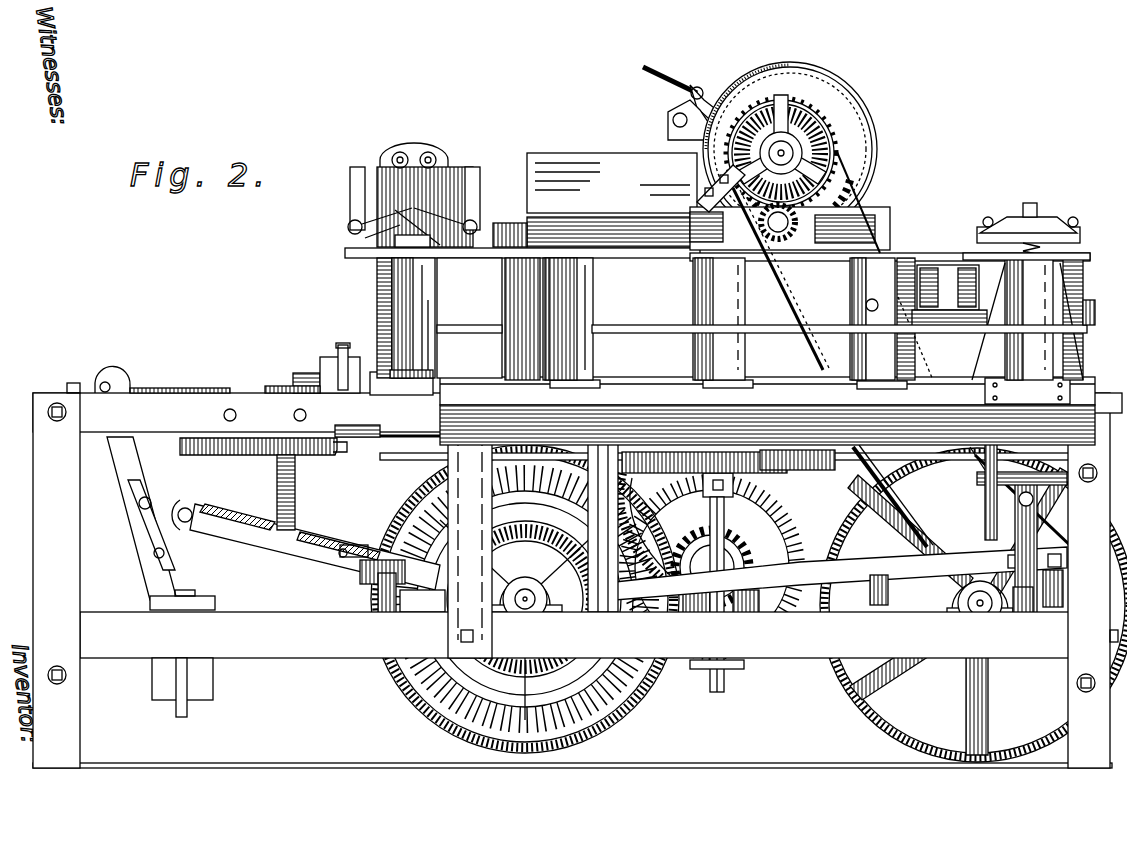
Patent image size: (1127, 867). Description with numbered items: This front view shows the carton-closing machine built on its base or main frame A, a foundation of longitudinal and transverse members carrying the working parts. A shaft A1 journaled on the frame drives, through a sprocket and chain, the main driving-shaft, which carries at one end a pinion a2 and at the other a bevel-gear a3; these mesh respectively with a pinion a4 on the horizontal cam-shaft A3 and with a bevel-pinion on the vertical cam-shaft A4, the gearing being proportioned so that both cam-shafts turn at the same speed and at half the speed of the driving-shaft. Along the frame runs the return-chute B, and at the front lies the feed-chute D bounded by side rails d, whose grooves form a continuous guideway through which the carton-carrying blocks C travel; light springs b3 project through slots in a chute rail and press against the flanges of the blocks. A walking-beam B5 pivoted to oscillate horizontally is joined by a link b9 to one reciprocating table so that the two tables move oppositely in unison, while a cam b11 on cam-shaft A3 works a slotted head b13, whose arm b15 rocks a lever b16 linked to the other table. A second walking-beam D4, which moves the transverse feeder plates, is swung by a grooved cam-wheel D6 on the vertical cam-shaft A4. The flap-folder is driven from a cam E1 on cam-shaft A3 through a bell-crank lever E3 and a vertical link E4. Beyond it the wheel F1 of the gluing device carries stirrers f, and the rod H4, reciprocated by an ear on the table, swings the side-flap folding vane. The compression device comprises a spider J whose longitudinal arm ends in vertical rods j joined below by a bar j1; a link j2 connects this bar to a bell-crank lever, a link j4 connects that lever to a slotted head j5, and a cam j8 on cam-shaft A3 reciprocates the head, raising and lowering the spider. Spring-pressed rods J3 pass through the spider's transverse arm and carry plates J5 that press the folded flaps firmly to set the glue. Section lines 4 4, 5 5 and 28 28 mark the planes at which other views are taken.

The base or main frame A is at (305, 655).
The shaft A1 is at (982, 612).
The horizontal cam-shaft A3 is at (525, 604).
The vertical cam-shaft A4 is at (740, 615).
The pinion a2 is at (745, 540).
The bevel-gear a3 is at (775, 602).
The pinion a4 is at (735, 492).
The return-chute B is at (767, 410).
The walking-beam B5 is at (305, 458).
The light springs b3 is at (600, 380).
The link b9 is at (396, 458).
The cam b11 is at (370, 587).
The slotted head b13 is at (438, 602).
The arm b15 is at (272, 540).
The lever b16 is at (145, 582).
The carton-carrying blocks C is at (736, 319).
The feed-chute D is at (380, 390).
The side rails d is at (375, 375).
The walking-beam D4 is at (855, 450).
The horizontal cam-wheel D6 is at (790, 455).
The cam E1 is at (413, 152).
The bell-crank lever E3 is at (275, 535).
The vertical link E4 is at (375, 270).
The fly wheel F1 is at (878, 150).
The stirrers f is at (650, 76).
The longitudinally-extending rod H4 is at (640, 325).
The spider J is at (1082, 240).
The longitudinally-movable rods J3 is at (1045, 235).
The plates J5 is at (1010, 225).
The rods j is at (1075, 358).
The bar j1 is at (1050, 492).
The link j2 is at (1062, 604).
The link j4 is at (880, 605).
The slotted head j5 is at (592, 608).
The cam j8 is at (620, 712).
The section line 4 is at (503, 358).
The section line 5 is at (1120, 505).
The section line 28 is at (690, 389).